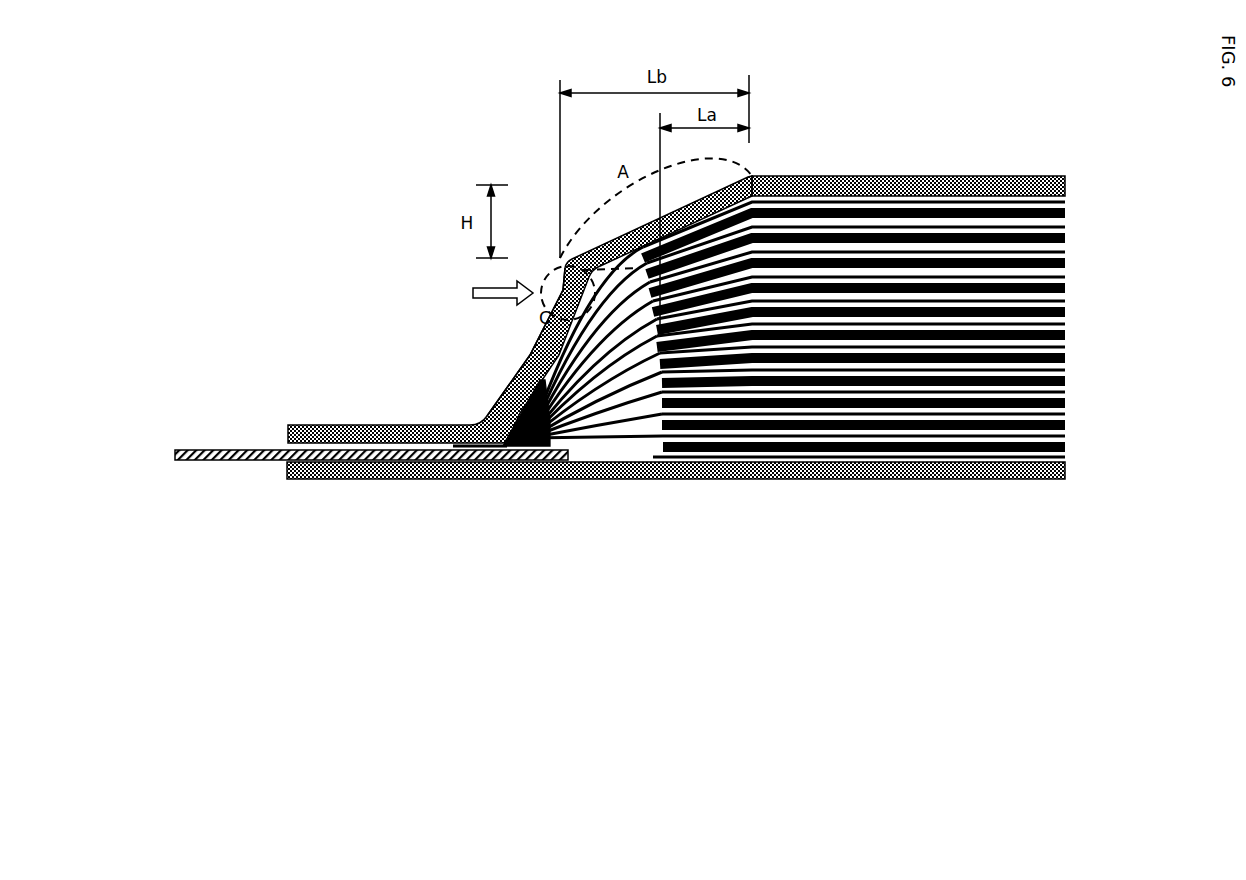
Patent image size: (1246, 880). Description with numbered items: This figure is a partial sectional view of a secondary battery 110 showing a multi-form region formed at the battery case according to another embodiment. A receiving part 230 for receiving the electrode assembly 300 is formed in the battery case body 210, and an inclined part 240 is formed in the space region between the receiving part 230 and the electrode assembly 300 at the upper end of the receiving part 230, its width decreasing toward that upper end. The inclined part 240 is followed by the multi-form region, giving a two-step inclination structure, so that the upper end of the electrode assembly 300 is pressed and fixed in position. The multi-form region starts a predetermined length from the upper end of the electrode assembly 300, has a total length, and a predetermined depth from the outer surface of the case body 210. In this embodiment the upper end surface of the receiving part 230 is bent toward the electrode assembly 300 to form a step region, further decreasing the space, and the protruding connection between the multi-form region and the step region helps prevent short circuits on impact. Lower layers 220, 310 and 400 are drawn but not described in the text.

The secondary battery 110 is at (241, 106).
The battery case body 210 is at (827, 176).
The second insulating layer 220 is at (763, 479).
The receiving part 230 is at (560, 355).
The inclined part 240 is at (504, 387).
The electrode assembly 300 is at (1082, 197).
The electrode tab bundle 310 is at (540, 450).
The lead 400 is at (240, 450).